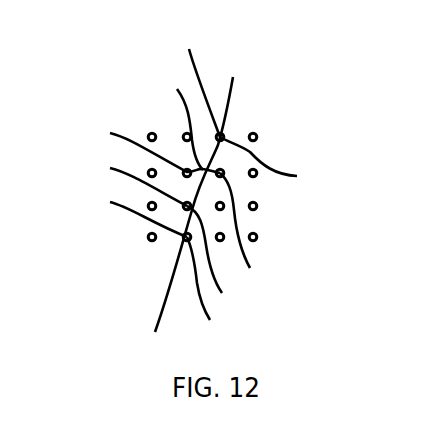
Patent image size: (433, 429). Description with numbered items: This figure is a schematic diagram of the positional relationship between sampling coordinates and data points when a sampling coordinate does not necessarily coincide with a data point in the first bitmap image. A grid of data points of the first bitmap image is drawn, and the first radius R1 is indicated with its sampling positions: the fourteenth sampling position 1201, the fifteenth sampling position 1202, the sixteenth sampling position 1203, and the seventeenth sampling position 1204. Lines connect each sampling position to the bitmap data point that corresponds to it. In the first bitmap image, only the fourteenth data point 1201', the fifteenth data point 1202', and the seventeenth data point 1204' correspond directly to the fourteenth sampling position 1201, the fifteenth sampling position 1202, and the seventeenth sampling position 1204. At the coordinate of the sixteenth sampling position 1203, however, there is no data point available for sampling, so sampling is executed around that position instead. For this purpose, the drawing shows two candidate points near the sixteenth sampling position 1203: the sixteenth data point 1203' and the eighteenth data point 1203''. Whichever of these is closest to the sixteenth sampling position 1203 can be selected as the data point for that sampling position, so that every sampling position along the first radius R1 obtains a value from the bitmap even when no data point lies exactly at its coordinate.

The fourteenth sampling position 1201 is at (198, 216).
The fourteenth data point 1201' is at (116, 212).
The fifteenth sampling position 1202 is at (235, 265).
The fifteenth data point 1202' is at (116, 180).
The sixteenth sampling position 1203 is at (165, 113).
The sixteenth data point 1203' is at (268, 233).
The eighteenth data point 1203'' is at (128, 146).
The seventeenth sampling position 1204 is at (194, 75).
The seventeenth data point 1204' is at (293, 166).
The first radius R1 is at (220, 137).